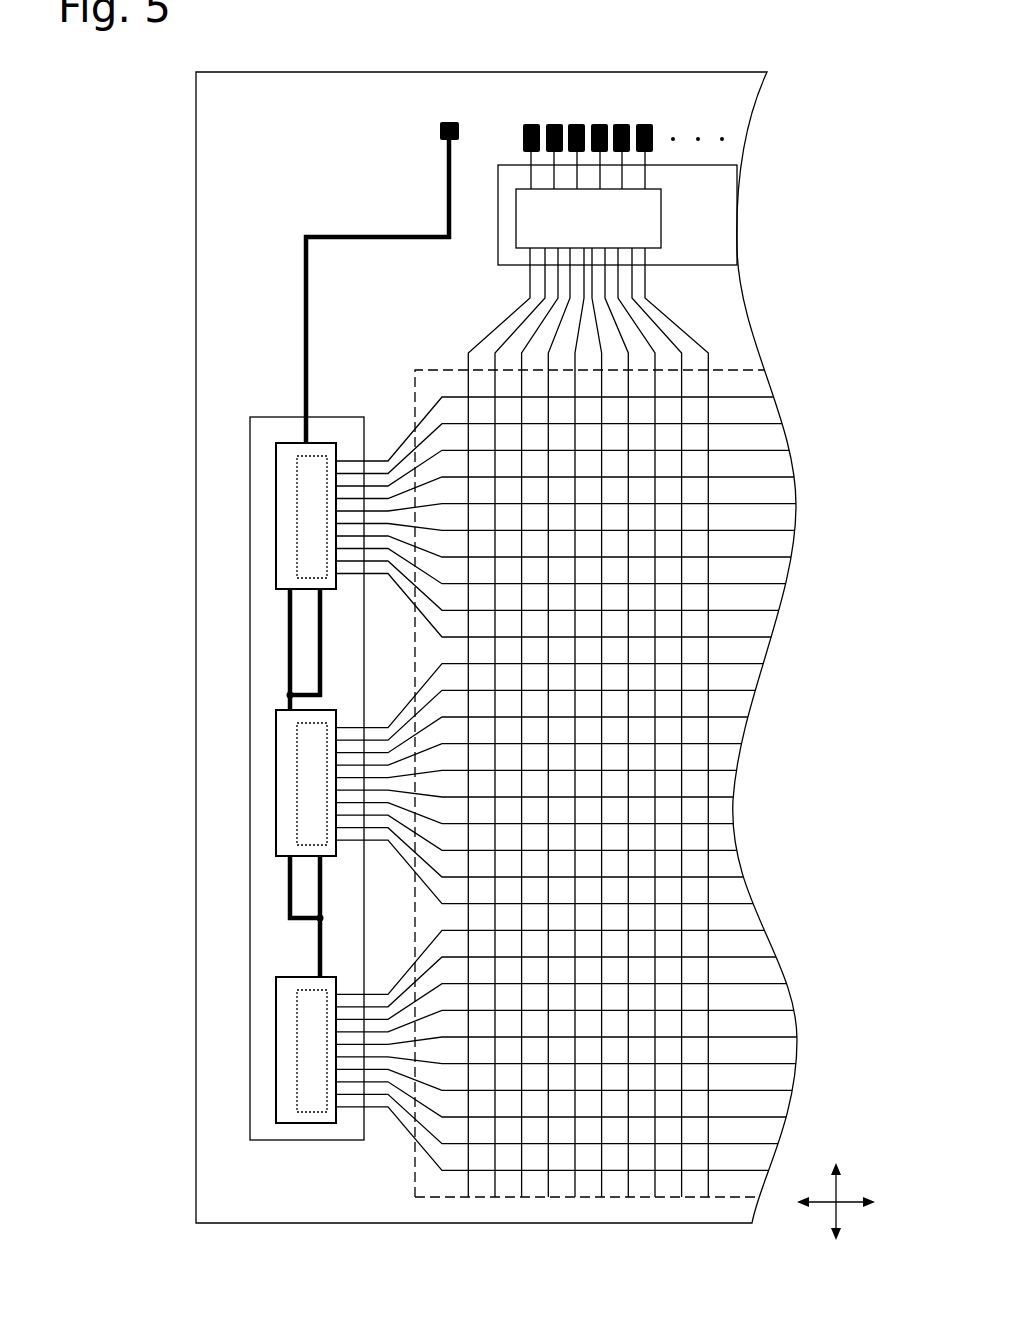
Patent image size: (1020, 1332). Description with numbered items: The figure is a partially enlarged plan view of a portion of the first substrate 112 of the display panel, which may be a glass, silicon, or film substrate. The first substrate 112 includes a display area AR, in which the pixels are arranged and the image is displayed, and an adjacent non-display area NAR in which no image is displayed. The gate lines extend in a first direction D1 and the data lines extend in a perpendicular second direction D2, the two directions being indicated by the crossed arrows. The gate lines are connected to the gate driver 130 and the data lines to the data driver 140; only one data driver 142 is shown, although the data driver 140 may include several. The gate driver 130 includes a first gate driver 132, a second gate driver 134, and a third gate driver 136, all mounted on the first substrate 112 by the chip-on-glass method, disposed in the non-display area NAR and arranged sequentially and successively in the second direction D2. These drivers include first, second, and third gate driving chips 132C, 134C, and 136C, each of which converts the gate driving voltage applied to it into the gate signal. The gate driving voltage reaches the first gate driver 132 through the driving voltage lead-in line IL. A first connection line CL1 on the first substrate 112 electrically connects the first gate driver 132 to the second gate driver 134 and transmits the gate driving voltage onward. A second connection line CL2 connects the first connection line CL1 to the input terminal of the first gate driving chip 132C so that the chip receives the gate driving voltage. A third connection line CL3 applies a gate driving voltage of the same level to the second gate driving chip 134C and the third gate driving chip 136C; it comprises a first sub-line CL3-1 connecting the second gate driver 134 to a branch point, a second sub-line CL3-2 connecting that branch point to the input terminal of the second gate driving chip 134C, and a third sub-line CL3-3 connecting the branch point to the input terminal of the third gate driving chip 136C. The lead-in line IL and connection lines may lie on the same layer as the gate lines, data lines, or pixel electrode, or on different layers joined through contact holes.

The first substrate 112 is at (196, 1193).
The gate driver 130 is at (250, 1125).
The first gate driver 132 is at (276, 570).
The first gate driving chip 132C is at (297, 488).
The second gate driver 134 is at (276, 780).
The second gate driving chip 134C is at (297, 815).
The third gate driver 136 is at (276, 1085).
The third gate driving chip 136C is at (297, 1040).
The data driver 140 is at (683, 165).
The data driver 142 is at (516, 210).
The driving voltage lead-in line IL is at (306, 355).
The first connection line CL1 is at (290, 634).
The second connection line CL2 is at (320, 677).
The third connection line CL3 is at (177, 916).
The first sub-line CL3-1 is at (305, 917).
The second sub-line CL3-2 is at (290, 880).
The third sub-line CL3-3 is at (320, 957).
The display area AR is at (540, 1195).
The non-display area NAR is at (318, 1195).
The first direction D1 is at (850, 1203).
The second direction D2 is at (838, 1189).